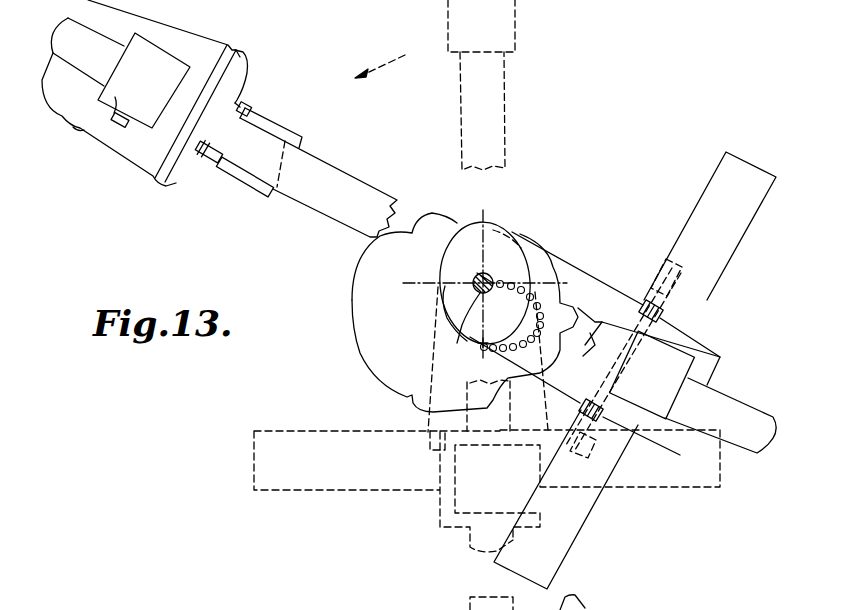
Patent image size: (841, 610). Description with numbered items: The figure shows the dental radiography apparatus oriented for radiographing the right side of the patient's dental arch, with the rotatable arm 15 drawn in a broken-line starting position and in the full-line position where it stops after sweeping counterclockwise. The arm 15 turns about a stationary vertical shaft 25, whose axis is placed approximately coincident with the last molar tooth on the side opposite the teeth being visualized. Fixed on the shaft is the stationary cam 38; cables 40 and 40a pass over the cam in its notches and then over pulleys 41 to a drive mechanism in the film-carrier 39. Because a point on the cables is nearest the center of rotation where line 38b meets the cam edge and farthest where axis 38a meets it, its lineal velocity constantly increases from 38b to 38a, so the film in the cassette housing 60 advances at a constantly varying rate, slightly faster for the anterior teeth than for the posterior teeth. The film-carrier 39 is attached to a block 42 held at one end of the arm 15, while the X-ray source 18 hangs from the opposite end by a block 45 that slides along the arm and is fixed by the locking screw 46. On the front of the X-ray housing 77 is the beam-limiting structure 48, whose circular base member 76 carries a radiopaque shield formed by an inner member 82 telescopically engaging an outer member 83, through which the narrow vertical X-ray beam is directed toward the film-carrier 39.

The arm 15 is at (318, 197).
The X-ray source 18 is at (140, 153).
The vertical shaft 25 is at (481, 345).
The stationary cam 38 is at (508, 247).
The axis 38a is at (483, 249).
The intersection point 38b is at (445, 286).
The film-carrier 39 is at (720, 277).
The cable 40 is at (437, 345).
The cable 40a is at (570, 265).
The pulley 41 is at (655, 306).
The block 42 is at (670, 360).
The block 45 is at (108, 107).
The locking screw 46 is at (113, 120).
The structure 48 is at (263, 190).
The cassette housing 60 is at (672, 270).
The circular base member 76 is at (238, 95).
The X-ray housing 77 is at (247, 63).
The inner member 82 is at (250, 106).
The outer member 83 is at (290, 134).